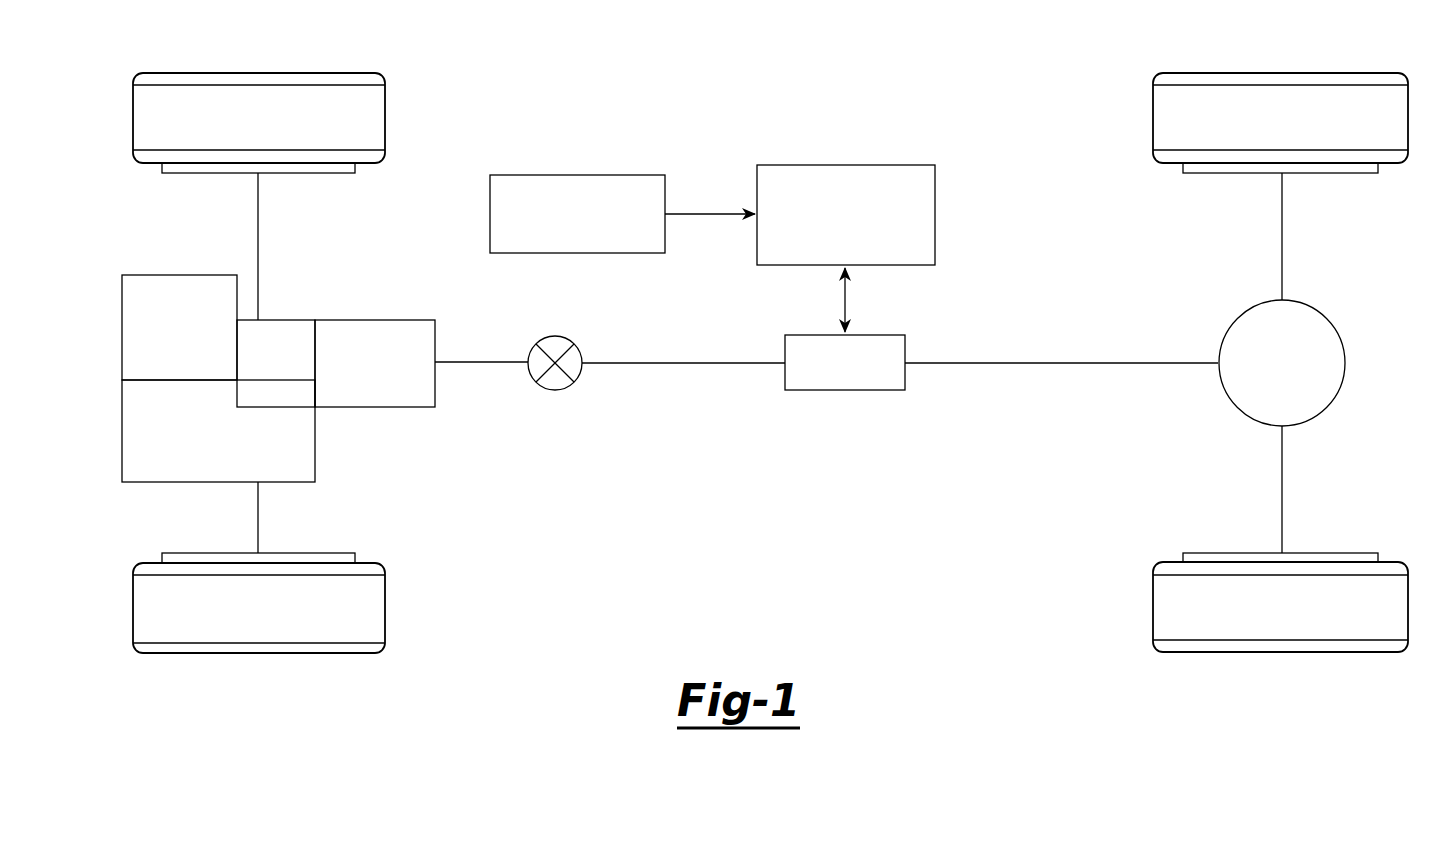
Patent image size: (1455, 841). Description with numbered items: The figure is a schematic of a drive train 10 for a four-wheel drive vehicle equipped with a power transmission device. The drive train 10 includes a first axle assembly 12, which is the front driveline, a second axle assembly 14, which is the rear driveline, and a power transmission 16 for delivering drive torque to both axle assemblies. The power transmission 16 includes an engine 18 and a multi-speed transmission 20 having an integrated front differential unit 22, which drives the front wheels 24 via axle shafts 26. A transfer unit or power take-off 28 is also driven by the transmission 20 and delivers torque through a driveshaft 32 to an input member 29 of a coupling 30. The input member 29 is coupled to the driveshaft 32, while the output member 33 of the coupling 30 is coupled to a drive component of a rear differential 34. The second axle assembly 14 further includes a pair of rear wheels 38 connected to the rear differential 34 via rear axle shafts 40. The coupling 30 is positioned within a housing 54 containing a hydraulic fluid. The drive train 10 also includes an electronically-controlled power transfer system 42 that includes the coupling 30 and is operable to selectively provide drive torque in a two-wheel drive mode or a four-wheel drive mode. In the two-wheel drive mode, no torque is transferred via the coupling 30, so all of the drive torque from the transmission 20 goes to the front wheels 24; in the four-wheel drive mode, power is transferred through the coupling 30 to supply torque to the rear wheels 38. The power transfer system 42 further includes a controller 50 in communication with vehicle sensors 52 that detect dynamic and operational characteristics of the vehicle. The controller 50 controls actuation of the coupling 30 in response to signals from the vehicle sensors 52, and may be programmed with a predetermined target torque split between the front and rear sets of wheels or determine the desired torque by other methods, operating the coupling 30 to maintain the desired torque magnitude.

The drive train 10 is at (912, 534).
The first axle assembly 12 is at (310, 250).
The second axle assembly 14 is at (1328, 263).
The power transmission 16 is at (392, 450).
The engine 18 is at (156, 347).
The multi-speed transmission 20 is at (174, 449).
The front differential unit 22 is at (261, 385).
The front wheels 24 is at (372, 110).
The axle shafts 26 is at (258, 236).
The power take-off 28 is at (358, 385).
The input member 29 is at (656, 360).
The coupling 30 is at (863, 398).
The driveshaft 32 is at (467, 372).
The output member 33 is at (1065, 365).
The rear differential 34 is at (1312, 392).
The rear wheels 38 is at (1168, 117).
The rear axle shafts 40 is at (1283, 208).
The power transfer system 42 is at (731, 100).
The controller 50 is at (789, 165).
The vehicle sensors 52 is at (537, 175).
The housing 54 is at (784, 350).